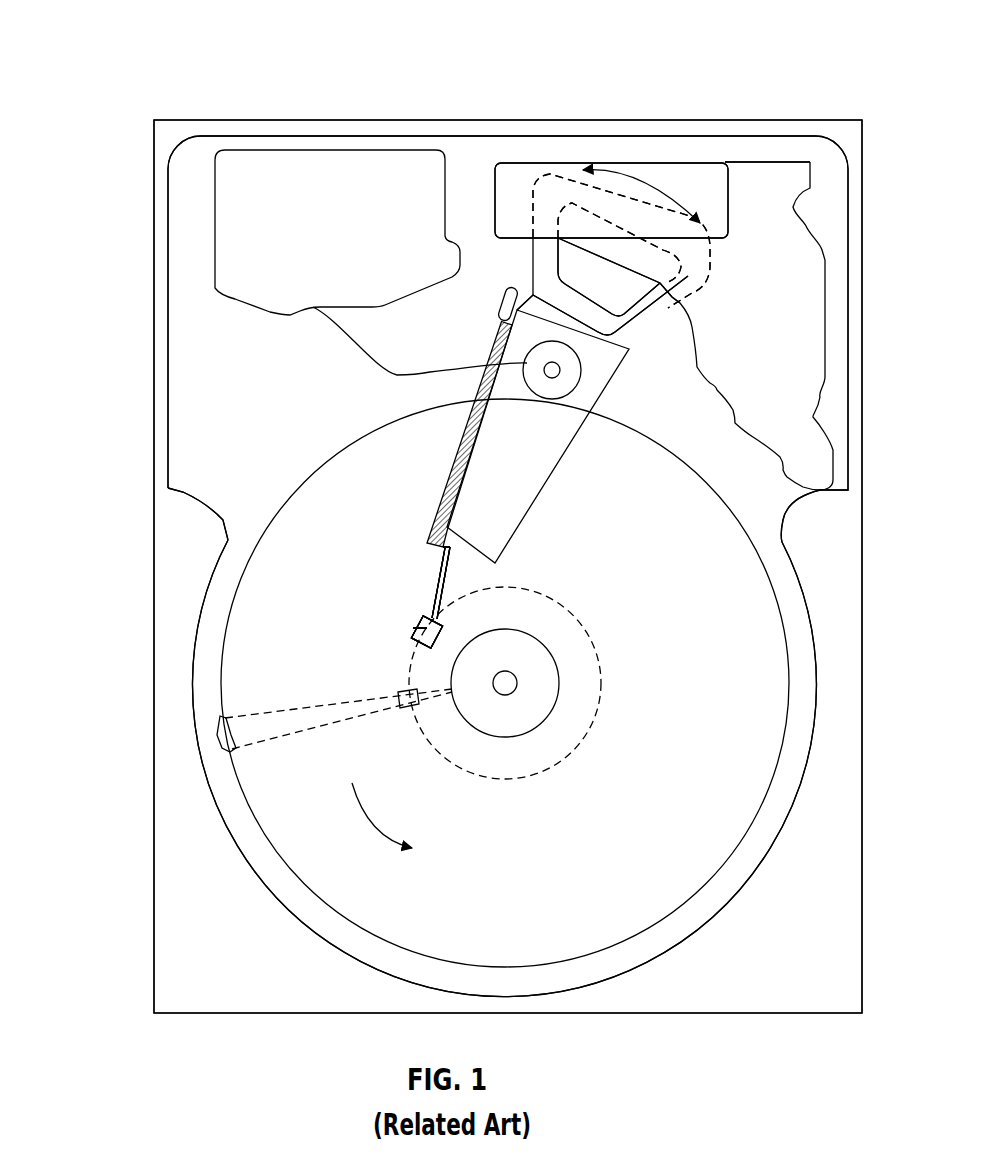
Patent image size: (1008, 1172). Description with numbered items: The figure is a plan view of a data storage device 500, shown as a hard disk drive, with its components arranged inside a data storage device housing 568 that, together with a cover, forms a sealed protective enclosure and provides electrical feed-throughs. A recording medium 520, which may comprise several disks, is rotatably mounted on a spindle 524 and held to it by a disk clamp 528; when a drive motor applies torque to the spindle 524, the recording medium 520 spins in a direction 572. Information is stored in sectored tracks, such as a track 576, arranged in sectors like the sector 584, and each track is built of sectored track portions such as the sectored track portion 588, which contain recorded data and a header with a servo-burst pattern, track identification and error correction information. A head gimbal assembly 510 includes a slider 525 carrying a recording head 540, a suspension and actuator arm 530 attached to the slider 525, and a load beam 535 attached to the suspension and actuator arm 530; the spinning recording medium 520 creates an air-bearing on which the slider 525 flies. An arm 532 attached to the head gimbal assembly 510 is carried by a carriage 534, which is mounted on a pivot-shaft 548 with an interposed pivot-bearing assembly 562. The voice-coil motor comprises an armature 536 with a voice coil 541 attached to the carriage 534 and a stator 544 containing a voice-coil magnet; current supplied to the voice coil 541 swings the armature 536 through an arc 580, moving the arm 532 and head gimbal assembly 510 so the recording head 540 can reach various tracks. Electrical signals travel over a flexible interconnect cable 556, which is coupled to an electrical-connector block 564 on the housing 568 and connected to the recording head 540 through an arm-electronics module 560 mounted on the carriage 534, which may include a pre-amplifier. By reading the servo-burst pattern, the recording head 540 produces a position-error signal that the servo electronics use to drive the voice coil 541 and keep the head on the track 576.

The data storage device 500 is at (146, 42).
The head gimbal assembly 510 is at (78, 440).
The recording medium 520 is at (753, 668).
The spindle 524 is at (508, 684).
The slider 525 is at (425, 627).
The disk clamp 528 is at (513, 723).
The suspension and actuator arm 530 is at (433, 590).
The arm 532 is at (500, 505).
The carriage 534 is at (580, 418).
The load beam 535 is at (437, 568).
The armature 536 is at (531, 258).
The recording head 540 is at (413, 647).
The voice coil 541 is at (545, 250).
The stator 544 is at (812, 256).
The pivot-shaft 548 is at (557, 373).
The flexible interconnect cable 556 is at (317, 307).
The arm-electronics module 560 is at (502, 327).
The pivot-bearing assembly 562 is at (477, 387).
The electrical-connector block 564 is at (233, 232).
The data storage device housing 568 is at (843, 135).
The direction 572 is at (392, 812).
The track 576 is at (567, 612).
The arc 580 is at (636, 184).
The sector 584 is at (220, 735).
The sectored track portion 588 is at (410, 655).